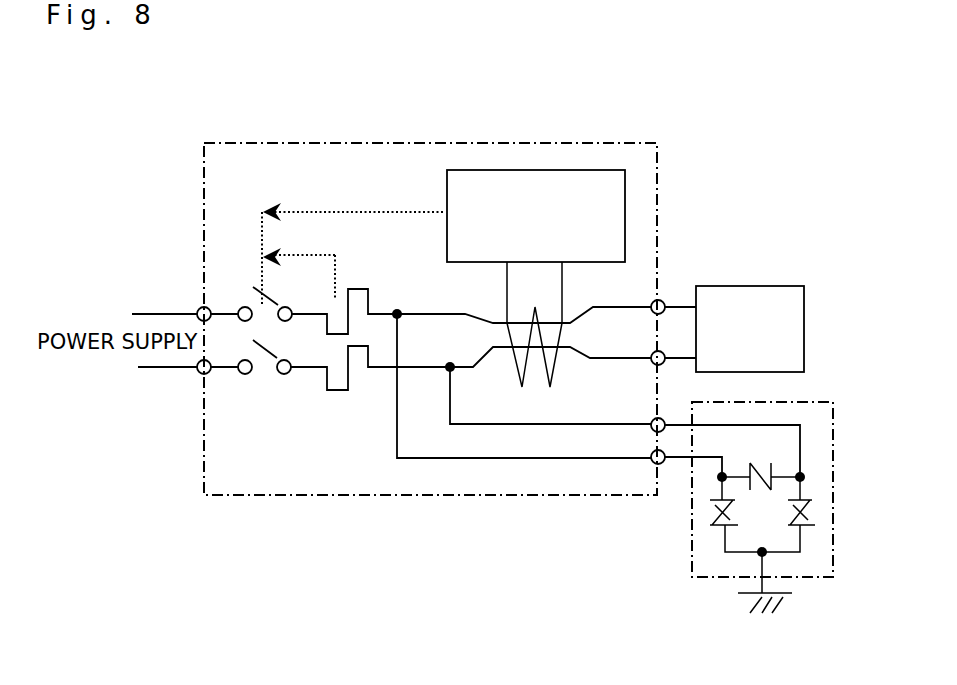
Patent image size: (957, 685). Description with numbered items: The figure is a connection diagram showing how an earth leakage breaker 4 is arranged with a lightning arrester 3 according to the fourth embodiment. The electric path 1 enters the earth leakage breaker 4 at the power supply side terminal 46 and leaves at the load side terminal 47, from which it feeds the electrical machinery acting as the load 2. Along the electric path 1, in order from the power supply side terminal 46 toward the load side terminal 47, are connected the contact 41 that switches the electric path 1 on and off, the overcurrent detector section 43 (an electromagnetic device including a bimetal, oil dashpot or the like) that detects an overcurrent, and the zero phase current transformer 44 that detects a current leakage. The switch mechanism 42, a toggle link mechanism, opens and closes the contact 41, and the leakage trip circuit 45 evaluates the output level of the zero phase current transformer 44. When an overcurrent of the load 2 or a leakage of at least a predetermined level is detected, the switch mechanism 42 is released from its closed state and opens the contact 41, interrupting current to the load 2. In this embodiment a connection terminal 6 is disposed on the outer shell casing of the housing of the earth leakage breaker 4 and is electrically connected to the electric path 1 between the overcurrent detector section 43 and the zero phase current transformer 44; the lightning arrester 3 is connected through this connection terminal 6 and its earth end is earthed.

The electric path 1 is at (417, 313).
The electrical machinery 2 is at (758, 286).
The lightning arrester 3 is at (690, 562).
The earth leakage breaker 4 is at (268, 143).
The connection terminal 6 is at (650, 462).
The contact 41 is at (268, 362).
The switch mechanism 42 is at (260, 258).
The overcurrent detector section 43 is at (327, 373).
The zero phase current transformer 44 is at (558, 370).
The leakage trip circuit 45 is at (530, 170).
The power supply side terminal 46 is at (197, 313).
The load side terminal 47 is at (660, 300).